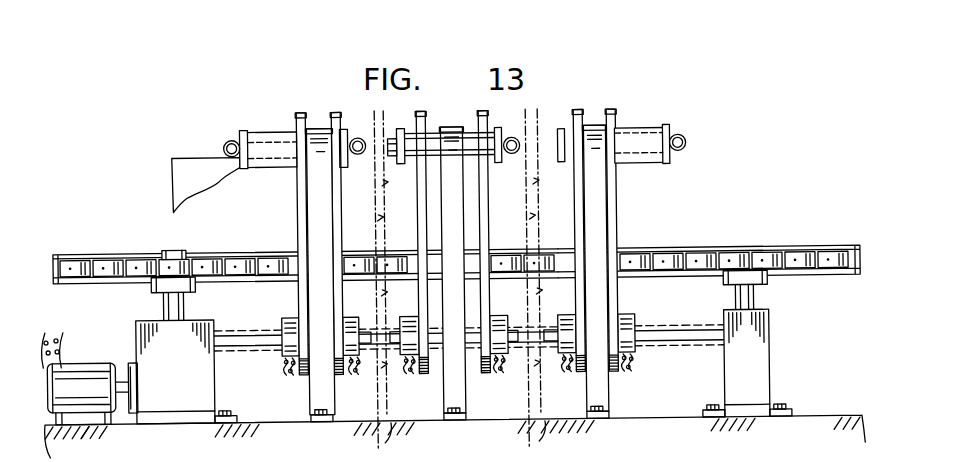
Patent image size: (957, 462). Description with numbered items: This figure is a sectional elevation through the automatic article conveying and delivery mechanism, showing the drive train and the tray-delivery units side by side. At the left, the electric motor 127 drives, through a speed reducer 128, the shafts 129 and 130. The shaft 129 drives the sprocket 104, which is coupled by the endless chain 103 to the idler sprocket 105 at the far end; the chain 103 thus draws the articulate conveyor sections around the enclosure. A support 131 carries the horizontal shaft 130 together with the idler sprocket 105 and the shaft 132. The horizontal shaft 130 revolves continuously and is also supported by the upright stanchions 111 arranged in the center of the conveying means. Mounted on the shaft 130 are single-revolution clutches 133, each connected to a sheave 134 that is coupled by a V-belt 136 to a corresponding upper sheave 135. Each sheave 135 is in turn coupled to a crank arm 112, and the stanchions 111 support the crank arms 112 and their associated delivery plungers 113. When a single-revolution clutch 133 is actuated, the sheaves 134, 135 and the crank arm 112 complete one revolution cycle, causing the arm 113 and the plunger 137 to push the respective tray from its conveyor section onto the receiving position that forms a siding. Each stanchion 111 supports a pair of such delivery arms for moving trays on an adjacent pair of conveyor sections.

The endless chain 103 is at (109, 256).
The sprocket 104 is at (240, 257).
The idler sprocket 105 is at (797, 256).
The stanchion 111 is at (319, 132).
The crank arm 112 is at (245, 134).
The delivery plunger 113 is at (395, 143).
The electric motor 127 is at (98, 372).
The speed reducer 128 is at (198, 375).
The shaft 129 is at (185, 309).
The horizontal shaft 130 is at (256, 338).
The support 131 is at (762, 356).
The shaft 132 is at (749, 307).
The single-revolution clutch 133 is at (284, 358).
The sheave 134 is at (338, 378).
The sheave 135 is at (302, 118).
The V-belt 136 is at (336, 208).
The plunger 137 is at (228, 151).